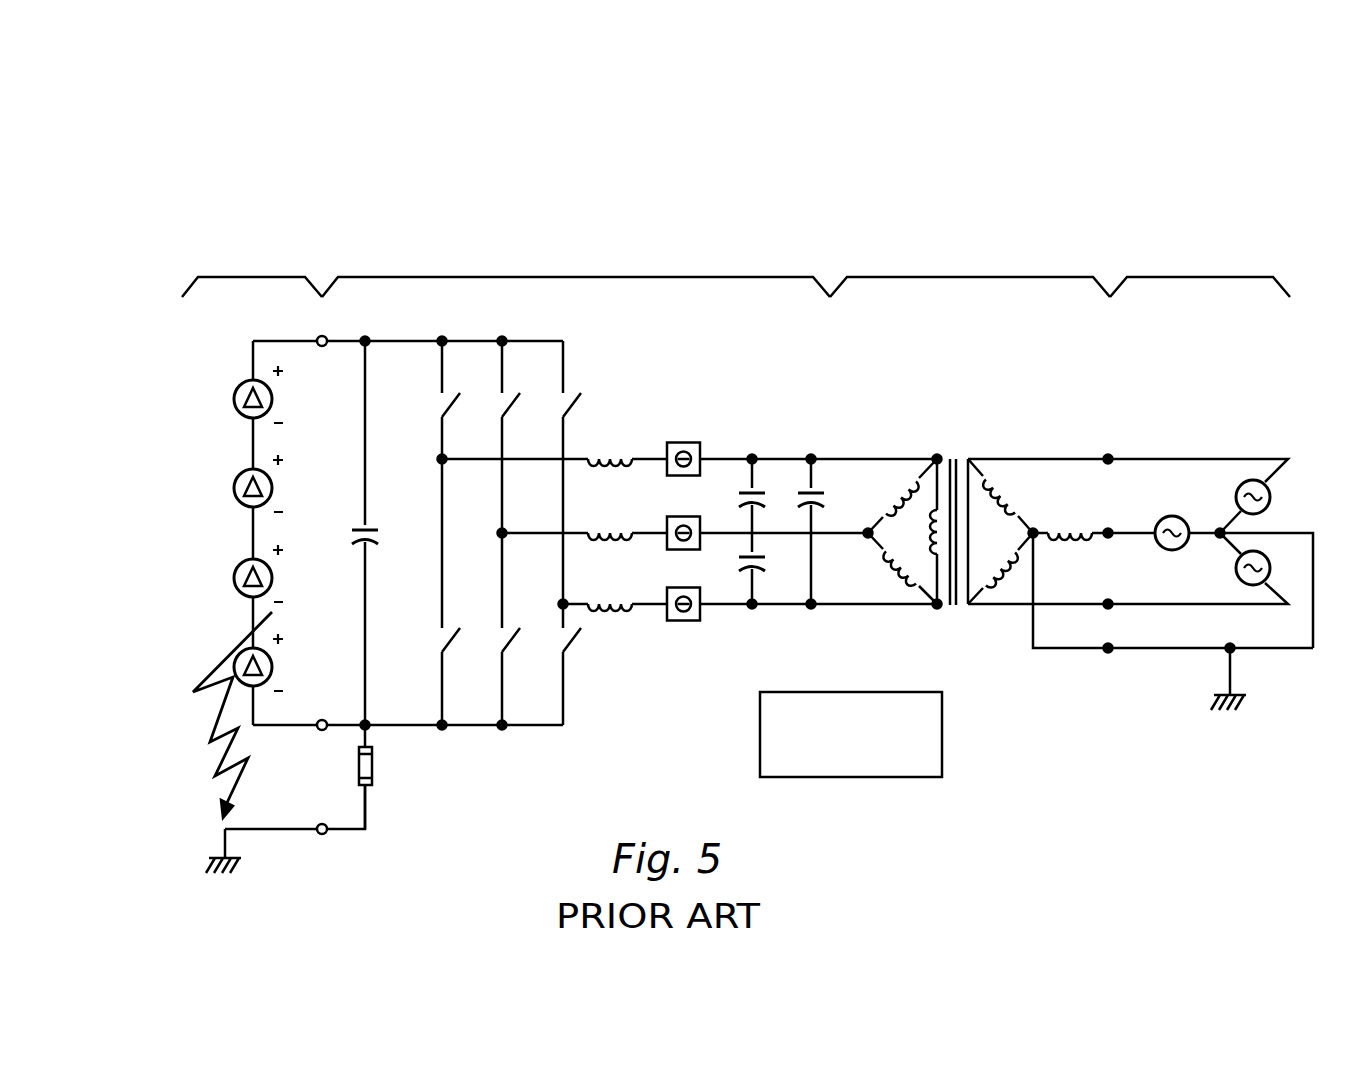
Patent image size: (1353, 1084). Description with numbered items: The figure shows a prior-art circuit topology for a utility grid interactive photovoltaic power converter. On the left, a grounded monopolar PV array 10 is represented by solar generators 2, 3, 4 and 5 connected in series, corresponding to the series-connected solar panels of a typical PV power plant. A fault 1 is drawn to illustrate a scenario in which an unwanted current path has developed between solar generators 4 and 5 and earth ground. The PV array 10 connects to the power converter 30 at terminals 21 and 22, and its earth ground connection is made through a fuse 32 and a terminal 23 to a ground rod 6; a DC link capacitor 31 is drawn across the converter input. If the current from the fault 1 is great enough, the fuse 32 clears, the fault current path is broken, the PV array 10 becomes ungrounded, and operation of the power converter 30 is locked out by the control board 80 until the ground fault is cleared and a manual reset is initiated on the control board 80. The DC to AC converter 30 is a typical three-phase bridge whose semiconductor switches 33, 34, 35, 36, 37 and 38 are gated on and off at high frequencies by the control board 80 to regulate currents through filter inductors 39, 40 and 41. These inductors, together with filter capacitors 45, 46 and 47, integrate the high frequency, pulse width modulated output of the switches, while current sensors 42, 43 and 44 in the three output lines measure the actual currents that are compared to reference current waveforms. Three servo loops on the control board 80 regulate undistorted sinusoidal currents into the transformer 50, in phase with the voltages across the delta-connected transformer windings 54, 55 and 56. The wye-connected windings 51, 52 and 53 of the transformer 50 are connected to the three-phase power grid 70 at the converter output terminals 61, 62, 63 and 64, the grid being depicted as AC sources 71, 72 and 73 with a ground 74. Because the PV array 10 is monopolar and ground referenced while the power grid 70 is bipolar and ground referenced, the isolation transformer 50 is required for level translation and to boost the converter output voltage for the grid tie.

The fault 1 is at (253, 715).
The solar generator 2 is at (263, 394).
The solar generator 3 is at (263, 483).
The solar generator 4 is at (263, 573).
The solar generator 5 is at (263, 662).
The ground rod 6 is at (223, 868).
The PV array 10 is at (249, 252).
The terminal 21 is at (321, 324).
The terminal 22 is at (323, 709).
The terminal 23 is at (323, 812).
The power converter 30 is at (576, 280).
The DC link capacitor 31 is at (381, 533).
The fuse 32 is at (382, 777).
The semiconductor switch 33 is at (458, 400).
The semiconductor switch 34 is at (458, 592).
The semiconductor switch 35 is at (518, 437).
The semiconductor switch 36 is at (518, 629).
The semiconductor switch 37 is at (578, 472).
The semiconductor switch 38 is at (579, 664).
The filter inductor 39 is at (610, 445).
The filter inductor 40 is at (610, 519).
The filter inductor 41 is at (610, 591).
The current sensor 42 is at (683, 446).
The current sensor 43 is at (683, 520).
The current sensor 44 is at (683, 591).
The filter capacitor 45 is at (769, 496).
The filter capacitor 46 is at (769, 568).
The filter capacitor 47 is at (828, 531).
The transformer 50 is at (970, 265).
The winding 51 is at (1002, 496).
The winding 52 is at (1070, 520).
The winding 53 is at (1000, 568).
The transformer winding 54 is at (899, 496).
The transformer winding 55 is at (928, 532).
The transformer winding 56 is at (899, 568).
The output terminal 61 is at (1128, 455).
The output terminal 62 is at (1203, 574).
The output terminal 63 is at (1128, 591).
The output terminal 64 is at (1173, 593).
The 3-phase power grid 70 is at (1200, 265).
The grid AC source 71 is at (1261, 506).
The grid AC source 72 is at (1172, 518).
The grid AC source 73 is at (1261, 559).
The grid ground 74 is at (1228, 695).
The control board 80 is at (851, 734).